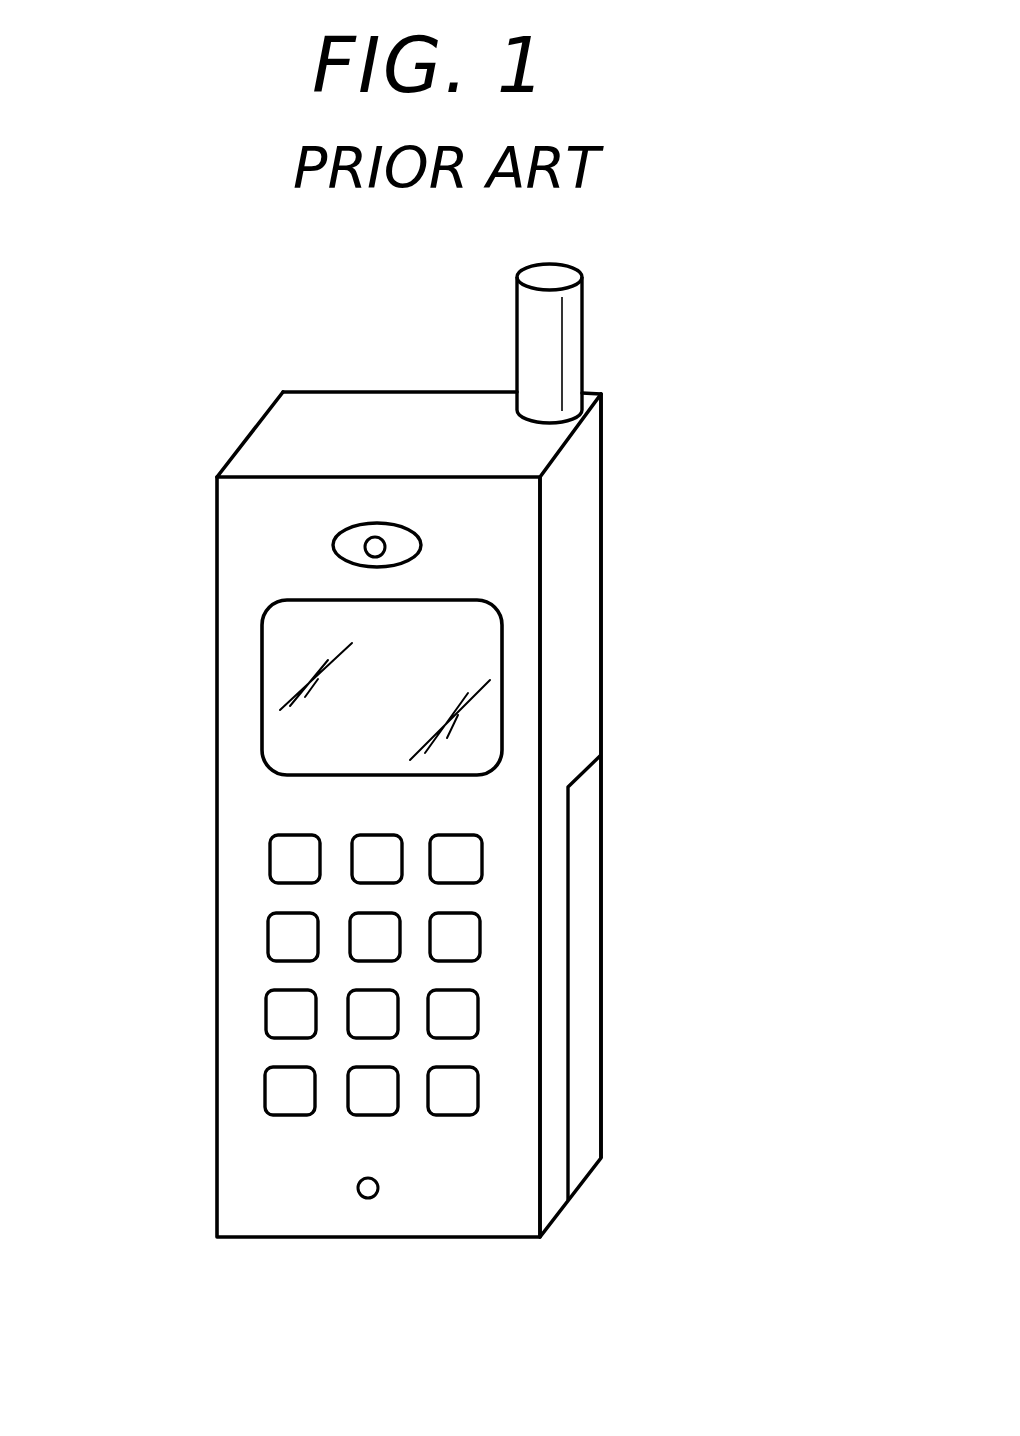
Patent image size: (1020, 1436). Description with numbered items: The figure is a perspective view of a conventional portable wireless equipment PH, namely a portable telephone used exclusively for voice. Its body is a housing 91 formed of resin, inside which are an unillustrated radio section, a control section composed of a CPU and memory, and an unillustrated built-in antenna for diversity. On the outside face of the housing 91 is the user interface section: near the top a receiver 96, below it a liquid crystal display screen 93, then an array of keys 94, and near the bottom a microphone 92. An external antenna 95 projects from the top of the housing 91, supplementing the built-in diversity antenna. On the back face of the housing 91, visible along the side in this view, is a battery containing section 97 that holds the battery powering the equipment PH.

The portable wireless equipment PH is at (618, 452).
The housing 91 is at (570, 670).
The microphone 92 is at (358, 1187).
The liquid crystal display screen 93 is at (278, 653).
The keys 94 is at (277, 927).
The external antenna 95 is at (582, 288).
The receiver 96 is at (333, 543).
The battery containing section 97 is at (587, 1002).